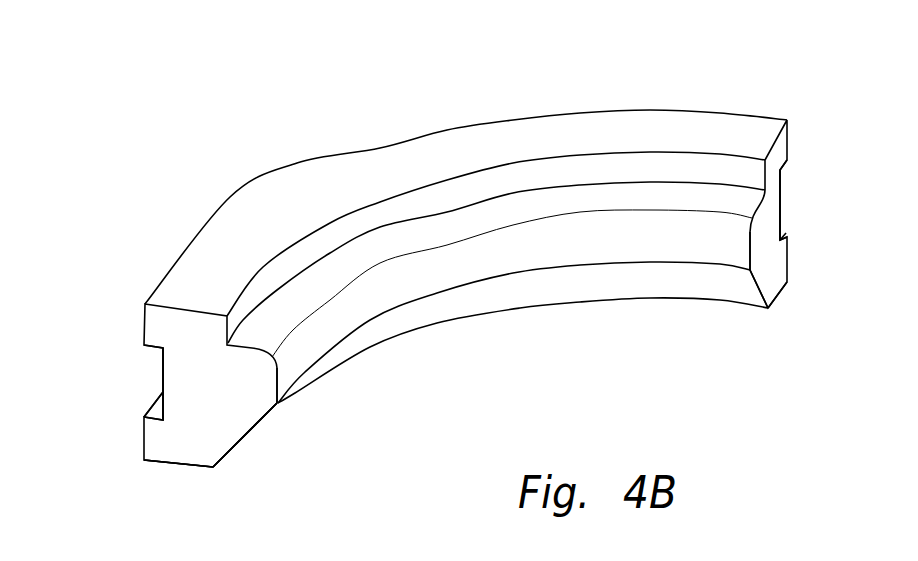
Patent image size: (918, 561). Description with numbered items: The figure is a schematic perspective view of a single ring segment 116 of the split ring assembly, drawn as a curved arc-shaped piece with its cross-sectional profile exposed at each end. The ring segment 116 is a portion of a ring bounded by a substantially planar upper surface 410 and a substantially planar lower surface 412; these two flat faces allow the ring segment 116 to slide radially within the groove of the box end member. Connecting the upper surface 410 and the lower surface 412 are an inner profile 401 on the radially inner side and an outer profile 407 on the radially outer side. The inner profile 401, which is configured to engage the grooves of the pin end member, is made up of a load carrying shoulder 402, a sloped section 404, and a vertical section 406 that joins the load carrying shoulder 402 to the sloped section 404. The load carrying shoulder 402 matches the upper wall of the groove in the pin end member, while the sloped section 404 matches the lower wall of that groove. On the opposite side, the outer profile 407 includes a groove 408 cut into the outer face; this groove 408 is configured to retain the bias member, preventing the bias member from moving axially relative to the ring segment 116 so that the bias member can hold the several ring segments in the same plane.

The ring segment 116 is at (408, 295).
The inner profile 401 is at (267, 465).
The load carrying shoulder 402 is at (540, 198).
The sloped section 404 is at (257, 427).
The vertical section 406 is at (490, 270).
The outer profile 407 is at (121, 344).
The groove 408 is at (162, 377).
The upper surface 410 is at (368, 177).
The lower surface 412 is at (180, 466).